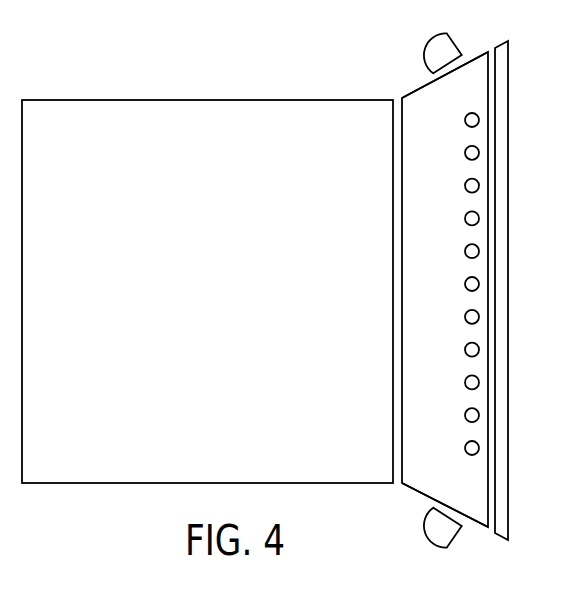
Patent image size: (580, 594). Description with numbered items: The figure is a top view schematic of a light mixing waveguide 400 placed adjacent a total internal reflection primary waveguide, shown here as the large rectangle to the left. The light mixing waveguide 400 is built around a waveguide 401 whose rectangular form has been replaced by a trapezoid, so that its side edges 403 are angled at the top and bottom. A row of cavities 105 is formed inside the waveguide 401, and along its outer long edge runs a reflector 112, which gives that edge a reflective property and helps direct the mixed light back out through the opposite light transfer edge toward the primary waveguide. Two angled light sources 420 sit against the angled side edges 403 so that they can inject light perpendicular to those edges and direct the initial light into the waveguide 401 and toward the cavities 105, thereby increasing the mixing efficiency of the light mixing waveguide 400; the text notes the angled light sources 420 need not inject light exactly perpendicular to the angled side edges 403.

The light mixing waveguide 400 is at (390, 74).
The waveguide 401 is at (453, 289).
The angled side edges 403 is at (484, 49).
The angled light sources 420 is at (447, 30).
The reflector 112 is at (505, 263).
The cavities 105 is at (466, 323).